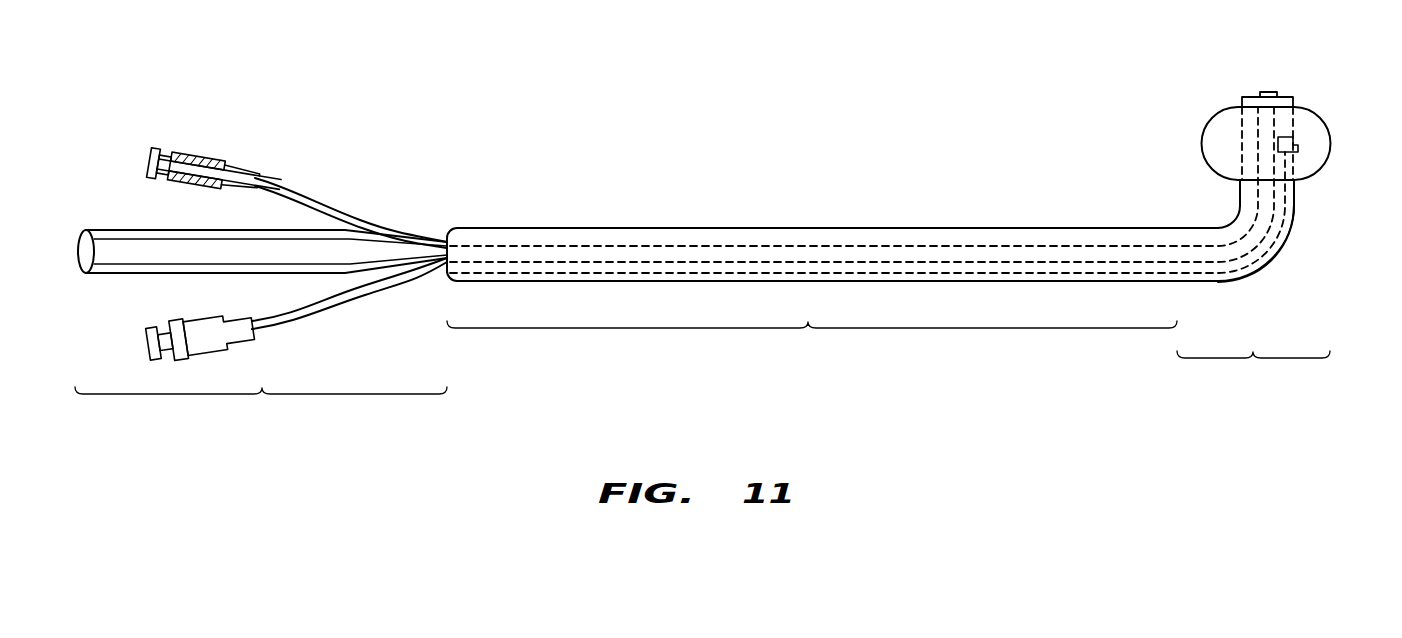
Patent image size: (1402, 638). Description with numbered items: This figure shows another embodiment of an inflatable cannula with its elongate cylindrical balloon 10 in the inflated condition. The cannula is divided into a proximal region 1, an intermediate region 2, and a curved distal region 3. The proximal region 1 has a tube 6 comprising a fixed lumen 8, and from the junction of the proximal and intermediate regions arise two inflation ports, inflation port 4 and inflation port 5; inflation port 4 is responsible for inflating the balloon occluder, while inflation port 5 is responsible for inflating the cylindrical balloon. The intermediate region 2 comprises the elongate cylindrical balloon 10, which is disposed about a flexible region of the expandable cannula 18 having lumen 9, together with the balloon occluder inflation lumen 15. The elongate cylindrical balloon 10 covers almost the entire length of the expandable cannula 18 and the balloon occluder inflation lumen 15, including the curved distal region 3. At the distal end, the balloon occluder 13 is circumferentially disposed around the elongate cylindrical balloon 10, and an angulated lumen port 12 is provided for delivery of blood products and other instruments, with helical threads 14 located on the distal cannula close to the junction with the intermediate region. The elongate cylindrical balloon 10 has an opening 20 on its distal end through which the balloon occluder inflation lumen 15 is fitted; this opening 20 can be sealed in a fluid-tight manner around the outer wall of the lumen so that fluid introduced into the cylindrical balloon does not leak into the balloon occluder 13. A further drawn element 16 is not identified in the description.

The proximal region 1 is at (261, 409).
The intermediate region 2 is at (812, 343).
The distal region 3 is at (1253, 373).
The inflation port 4 is at (146, 345).
The inflation port 5 is at (207, 146).
The tube 6 is at (122, 215).
The fixed lumen 8 is at (328, 250).
The lumen 9 is at (773, 257).
The elongate cylindrical balloon 10 is at (912, 228).
The angulated lumen port 12 is at (1267, 92).
The balloon occluder 13 is at (1317, 142).
The helical threads 14 is at (1196, 208).
The balloon occluder inflation lumen 15 is at (1260, 245).
The tubing 16 is at (390, 217).
The expandable cannula 18 is at (613, 240).
The opening 20 is at (1287, 137).